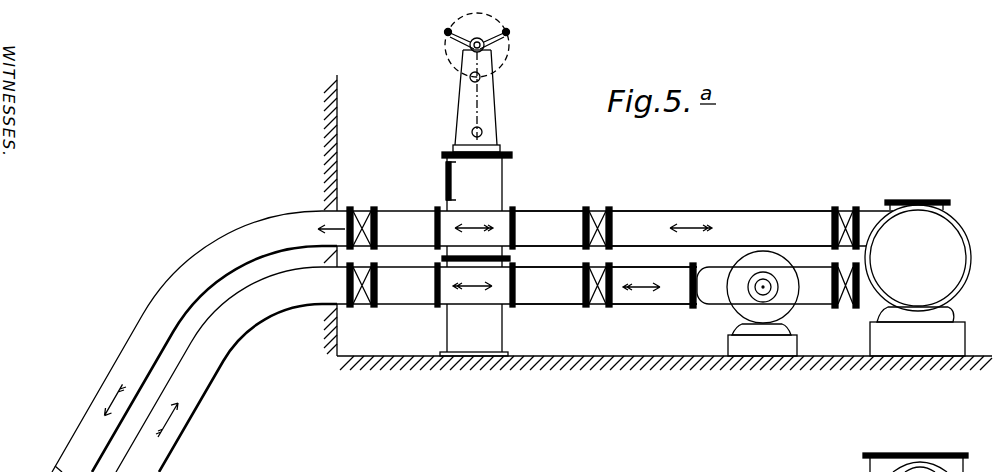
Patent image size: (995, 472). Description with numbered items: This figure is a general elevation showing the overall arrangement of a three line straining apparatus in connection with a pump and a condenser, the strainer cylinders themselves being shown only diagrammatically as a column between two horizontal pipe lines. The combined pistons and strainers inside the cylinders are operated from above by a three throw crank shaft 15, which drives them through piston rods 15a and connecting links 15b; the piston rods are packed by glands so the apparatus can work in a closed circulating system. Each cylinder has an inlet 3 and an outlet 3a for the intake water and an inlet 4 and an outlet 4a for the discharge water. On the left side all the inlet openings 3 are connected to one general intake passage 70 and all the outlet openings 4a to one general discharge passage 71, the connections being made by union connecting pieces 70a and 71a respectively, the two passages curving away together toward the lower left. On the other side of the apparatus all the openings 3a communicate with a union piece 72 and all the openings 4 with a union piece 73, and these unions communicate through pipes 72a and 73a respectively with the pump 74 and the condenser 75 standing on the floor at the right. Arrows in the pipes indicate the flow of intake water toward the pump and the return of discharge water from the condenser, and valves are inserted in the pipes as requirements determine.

The inlet 3 is at (434, 305).
The outlet 3a is at (515, 294).
The inlet 4 is at (521, 211).
The outlet 4a is at (436, 207).
The three throw crank shaft 15 is at (470, 44).
The piston rod 15a is at (470, 137).
The connecting link 15b is at (477, 98).
The general intake passage 70 is at (279, 312).
The union connecting piece 70a is at (398, 304).
The general discharge passage 71 is at (239, 229).
The union connecting piece 71a is at (386, 216).
The union piece 72 is at (564, 298).
The pipe 72a is at (649, 298).
The union piece 73 is at (556, 212).
The pipe 73a is at (678, 219).
The pump 74 is at (738, 309).
The condenser 75 is at (918, 278).